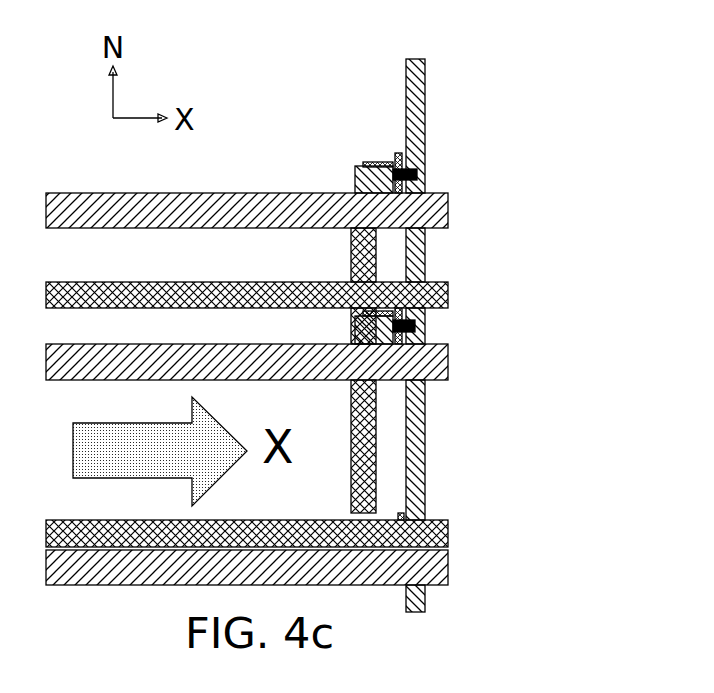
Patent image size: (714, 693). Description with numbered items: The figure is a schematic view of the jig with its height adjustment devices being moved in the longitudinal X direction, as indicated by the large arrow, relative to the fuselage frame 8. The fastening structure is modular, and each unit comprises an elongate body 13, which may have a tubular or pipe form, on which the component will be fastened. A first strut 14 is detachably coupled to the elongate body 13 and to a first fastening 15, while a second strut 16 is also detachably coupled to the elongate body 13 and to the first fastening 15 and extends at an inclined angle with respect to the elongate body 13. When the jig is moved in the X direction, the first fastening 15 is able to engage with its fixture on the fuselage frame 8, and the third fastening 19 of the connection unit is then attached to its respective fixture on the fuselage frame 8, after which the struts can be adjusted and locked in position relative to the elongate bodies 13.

The fuselage frame 8 is at (418, 67).
The elongate body 13 is at (448, 297).
The first strut 14 is at (375, 253).
The first fastening 15 is at (418, 173).
The second strut 16 is at (411, 153).
The third fastening 19 is at (412, 328).